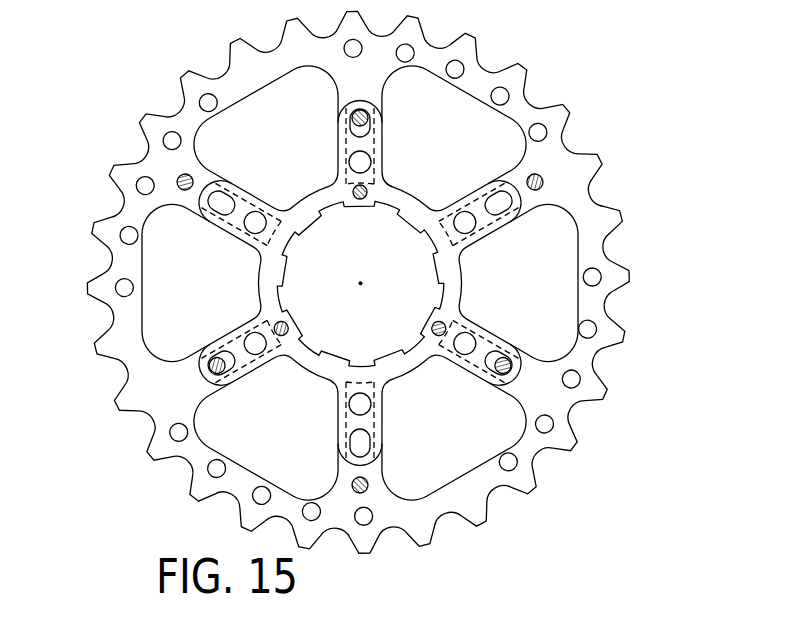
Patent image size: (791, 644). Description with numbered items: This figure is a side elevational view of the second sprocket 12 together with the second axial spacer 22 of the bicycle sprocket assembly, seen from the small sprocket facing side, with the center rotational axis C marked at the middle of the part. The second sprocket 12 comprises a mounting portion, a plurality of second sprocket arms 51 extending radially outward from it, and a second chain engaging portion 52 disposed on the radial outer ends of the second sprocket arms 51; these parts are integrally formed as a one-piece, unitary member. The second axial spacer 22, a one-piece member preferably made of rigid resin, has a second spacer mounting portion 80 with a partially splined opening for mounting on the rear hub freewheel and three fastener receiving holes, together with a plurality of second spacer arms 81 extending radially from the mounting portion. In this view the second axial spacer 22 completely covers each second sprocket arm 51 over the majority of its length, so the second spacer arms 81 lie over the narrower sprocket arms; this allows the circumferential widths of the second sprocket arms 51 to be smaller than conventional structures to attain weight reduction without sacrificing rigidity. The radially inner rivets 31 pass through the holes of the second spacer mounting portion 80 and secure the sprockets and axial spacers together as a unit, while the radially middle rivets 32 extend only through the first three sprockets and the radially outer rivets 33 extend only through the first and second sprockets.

The second sprocket 12 is at (172, 105).
The second axial spacer 22 is at (327, 142).
The radially inner rivets 31 is at (360, 200).
The radially middle rivets 32 is at (366, 127).
The radially outer rivets 33 is at (180, 176).
The second sprocket arms 51 is at (194, 364).
The second chain engaging portion 52 is at (596, 258).
The second spacer mounting portion 80 is at (455, 280).
The second spacer arms 81 is at (378, 414).
The center rotational axis C is at (358, 281).